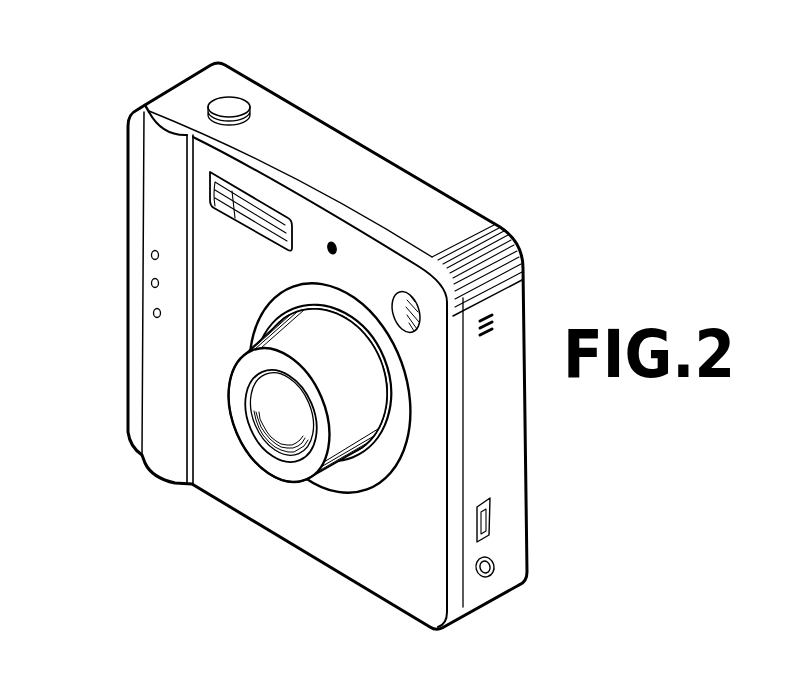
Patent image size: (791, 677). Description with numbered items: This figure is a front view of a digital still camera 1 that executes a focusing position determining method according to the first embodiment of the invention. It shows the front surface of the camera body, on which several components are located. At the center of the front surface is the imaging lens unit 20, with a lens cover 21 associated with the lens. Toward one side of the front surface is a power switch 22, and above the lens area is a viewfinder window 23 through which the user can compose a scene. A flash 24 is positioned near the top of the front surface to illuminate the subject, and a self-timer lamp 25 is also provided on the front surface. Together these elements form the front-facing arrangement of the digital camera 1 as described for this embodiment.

The digital still camera 1 is at (352, 45).
The imaging lens unit 20 is at (280, 417).
The lens cover 21 is at (300, 457).
The power switch 22 is at (153, 407).
The viewfinder window 23 is at (420, 332).
The flash 24 is at (210, 182).
The self-timer lamp 25 is at (150, 278).